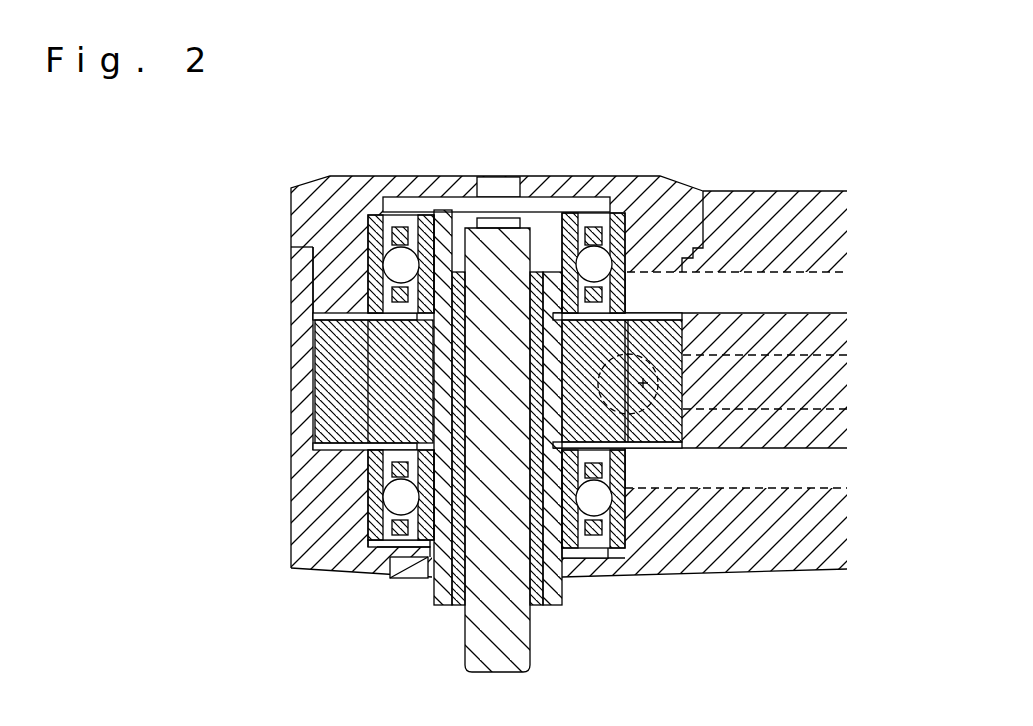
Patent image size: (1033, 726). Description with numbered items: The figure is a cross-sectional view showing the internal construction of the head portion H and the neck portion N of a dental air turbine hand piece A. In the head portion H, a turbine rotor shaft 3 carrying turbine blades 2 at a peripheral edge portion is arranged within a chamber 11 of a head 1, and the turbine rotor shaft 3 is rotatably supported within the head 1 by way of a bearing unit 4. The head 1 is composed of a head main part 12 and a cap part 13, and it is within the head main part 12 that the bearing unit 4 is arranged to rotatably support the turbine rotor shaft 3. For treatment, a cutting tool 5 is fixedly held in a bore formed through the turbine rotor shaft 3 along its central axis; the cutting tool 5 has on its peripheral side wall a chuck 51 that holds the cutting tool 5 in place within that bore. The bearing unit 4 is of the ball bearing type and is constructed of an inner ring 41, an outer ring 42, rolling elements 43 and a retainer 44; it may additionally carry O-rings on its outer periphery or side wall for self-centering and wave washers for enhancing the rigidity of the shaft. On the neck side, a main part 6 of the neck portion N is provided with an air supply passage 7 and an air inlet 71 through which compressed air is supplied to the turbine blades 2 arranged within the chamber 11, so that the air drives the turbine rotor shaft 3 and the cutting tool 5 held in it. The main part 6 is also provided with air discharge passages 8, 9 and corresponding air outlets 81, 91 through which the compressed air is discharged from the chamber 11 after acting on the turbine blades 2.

The head 1 is at (464, 350).
The turbine blades 2 is at (440, 283).
The turbine rotor shaft 3 is at (443, 598).
The bearing unit 4 is at (340, 573).
The cutting tool 5 is at (522, 650).
The main part of the neck portion 6 is at (798, 210).
The air supply passage 7 is at (713, 463).
The air discharge passage 8 is at (795, 291).
The air discharge passage 9 is at (802, 468).
The chamber 11 is at (318, 318).
The head main part 12 is at (303, 283).
The cap part 13 is at (303, 215).
The inner ring 41 is at (428, 545).
The outer ring 42 is at (357, 537).
The rolling elements 43 is at (393, 552).
The retainer 44 is at (415, 573).
The chuck 51 is at (538, 600).
The air inlet 71 is at (637, 400).
The air outlet 81 is at (682, 293).
The air outlet 91 is at (680, 470).
The head portion H is at (614, 163).
The dental air turbine hand piece A is at (681, 155).
The neck portion N is at (769, 173).